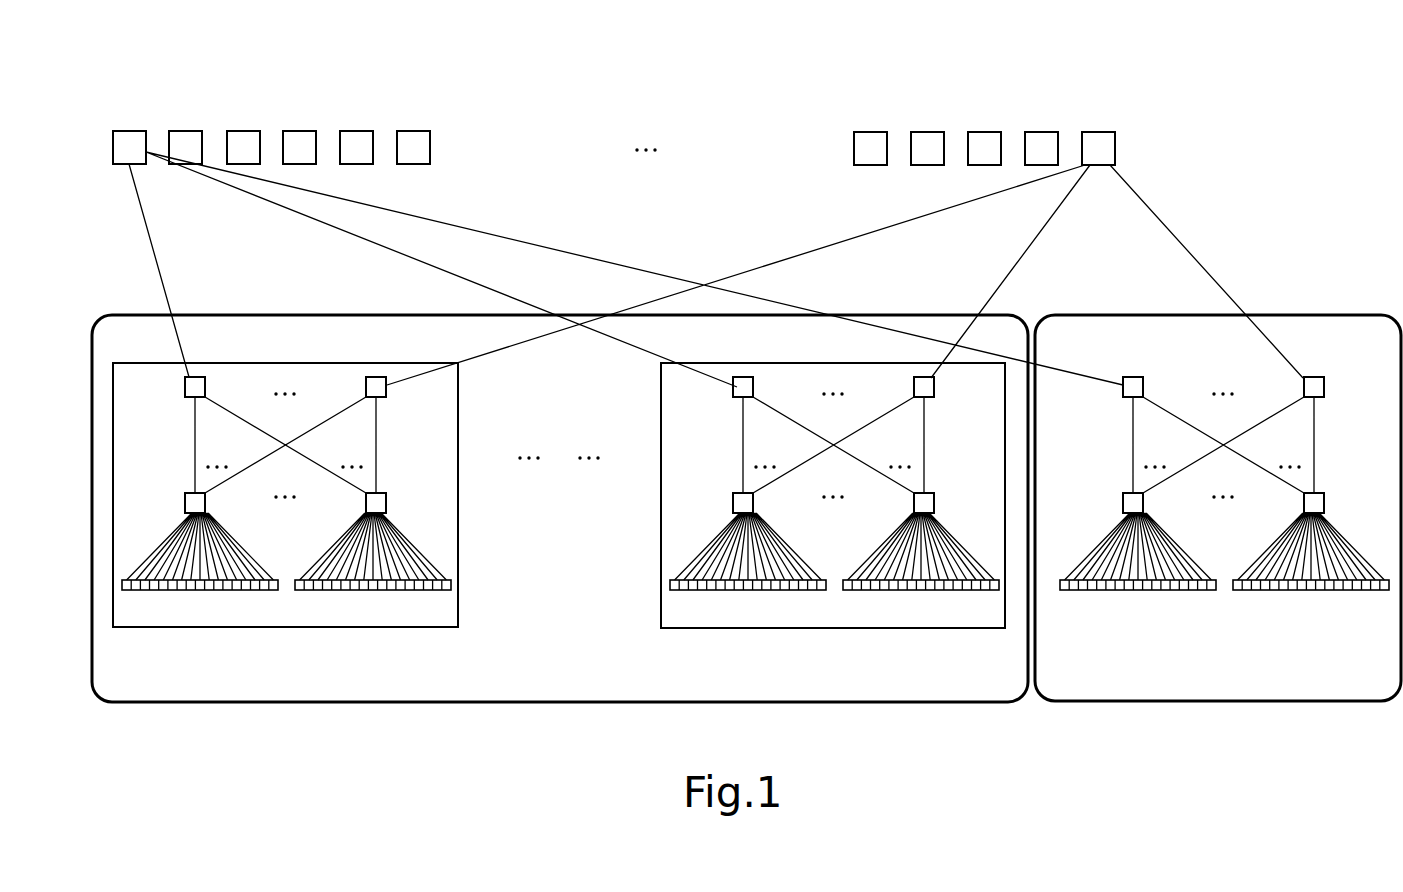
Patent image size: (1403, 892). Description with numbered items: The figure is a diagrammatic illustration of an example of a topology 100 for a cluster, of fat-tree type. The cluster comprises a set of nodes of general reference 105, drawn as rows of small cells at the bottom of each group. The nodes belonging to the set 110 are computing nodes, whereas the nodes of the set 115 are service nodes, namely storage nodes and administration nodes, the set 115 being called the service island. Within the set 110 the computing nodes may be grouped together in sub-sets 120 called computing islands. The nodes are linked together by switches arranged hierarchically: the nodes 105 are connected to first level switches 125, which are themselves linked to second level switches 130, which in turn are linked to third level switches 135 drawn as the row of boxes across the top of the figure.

The topology 100 is at (1255, 101).
The nodes 105 is at (193, 590).
The set of computing nodes 110 is at (323, 702).
The set of service nodes 115 is at (1222, 702).
The sub-set 120 is at (834, 567).
The first level switches 125 is at (935, 503).
The second level switches 130 is at (935, 385).
The third level switches 135 is at (1099, 131).